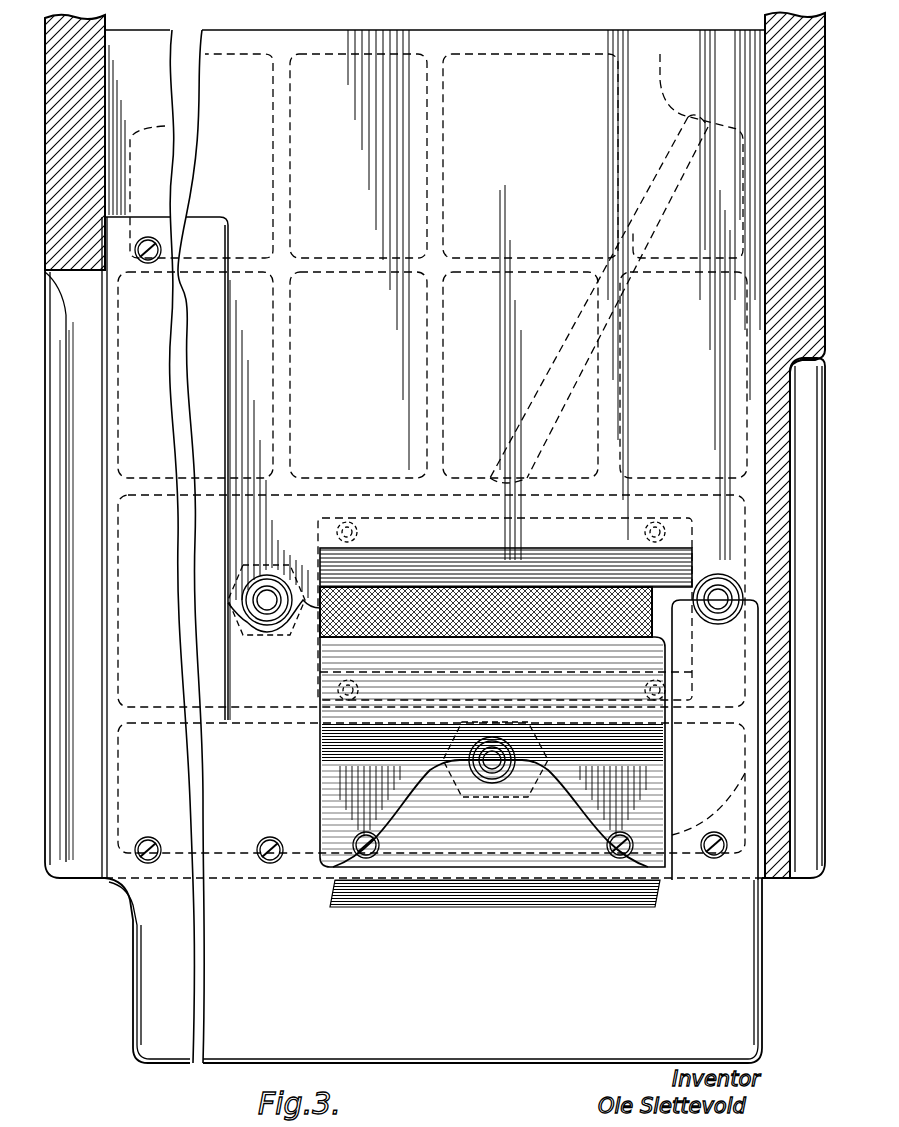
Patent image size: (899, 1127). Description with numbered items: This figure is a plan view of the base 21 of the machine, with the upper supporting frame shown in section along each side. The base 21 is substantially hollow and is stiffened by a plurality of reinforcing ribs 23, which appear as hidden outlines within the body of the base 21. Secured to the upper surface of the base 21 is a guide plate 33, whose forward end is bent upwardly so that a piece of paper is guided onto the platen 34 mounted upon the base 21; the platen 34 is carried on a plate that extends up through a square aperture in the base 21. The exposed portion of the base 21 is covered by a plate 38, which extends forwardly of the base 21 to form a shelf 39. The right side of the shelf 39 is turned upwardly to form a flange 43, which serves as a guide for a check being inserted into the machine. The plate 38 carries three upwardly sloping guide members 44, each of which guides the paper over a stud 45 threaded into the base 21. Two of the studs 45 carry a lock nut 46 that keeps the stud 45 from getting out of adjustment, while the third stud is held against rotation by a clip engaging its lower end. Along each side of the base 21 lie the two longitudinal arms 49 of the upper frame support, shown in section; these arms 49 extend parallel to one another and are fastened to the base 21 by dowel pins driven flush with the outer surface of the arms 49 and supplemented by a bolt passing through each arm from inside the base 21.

The base 21 is at (433, 466).
The reinforcing ribs 23 is at (487, 263).
The guide plate 33 is at (492, 772).
The platen 34 is at (410, 590).
The plate 38 is at (145, 975).
The shelf 39 is at (482, 970).
The flange 43 is at (762, 974).
The guide members 44 is at (610, 809).
The stud 45 is at (267, 608).
The lock nut 46 is at (224, 620).
The longitudinal arms 49 is at (62, 592).